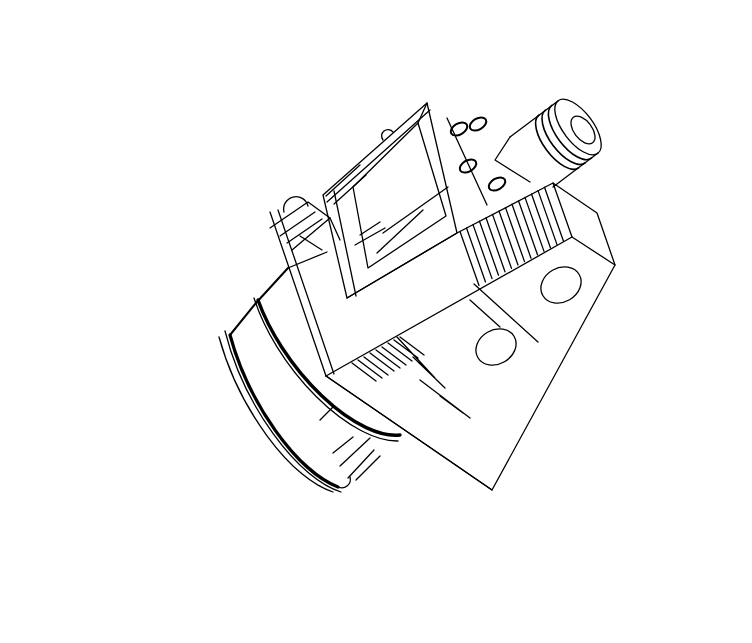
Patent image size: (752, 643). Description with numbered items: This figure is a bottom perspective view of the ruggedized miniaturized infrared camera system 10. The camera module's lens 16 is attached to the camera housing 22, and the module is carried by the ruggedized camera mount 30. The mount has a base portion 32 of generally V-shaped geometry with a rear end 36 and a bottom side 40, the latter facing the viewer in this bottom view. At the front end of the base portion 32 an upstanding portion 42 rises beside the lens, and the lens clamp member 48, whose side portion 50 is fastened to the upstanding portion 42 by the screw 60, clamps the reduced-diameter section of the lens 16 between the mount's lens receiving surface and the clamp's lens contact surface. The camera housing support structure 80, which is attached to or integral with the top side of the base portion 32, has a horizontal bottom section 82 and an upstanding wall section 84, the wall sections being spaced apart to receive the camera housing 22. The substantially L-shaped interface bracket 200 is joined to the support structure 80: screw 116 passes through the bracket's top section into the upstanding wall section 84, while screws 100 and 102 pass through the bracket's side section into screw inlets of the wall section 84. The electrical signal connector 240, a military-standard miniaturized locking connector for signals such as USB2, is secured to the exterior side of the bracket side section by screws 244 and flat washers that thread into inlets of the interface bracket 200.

The ruggedized miniaturized infrared camera system 10 is at (105, 170).
The lens 16 is at (288, 407).
The camera housing 22 is at (332, 188).
The ruggedized camera mount 30 is at (523, 433).
The base portion 32 is at (465, 456).
The rear end 36 is at (588, 227).
The bottom side 40 is at (547, 363).
The upstanding portion 42 is at (320, 290).
The lens clamp member 48 is at (290, 232).
The side portion 50 is at (300, 232).
The screw 60 is at (287, 207).
The camera housing support structure 80 is at (390, 250).
The horizontal bottom section 82 is at (450, 229).
The upstanding wall section 84 is at (407, 204).
The screw 100 is at (472, 115).
The screw 102 is at (470, 185).
The screw 116 is at (387, 137).
The interface bracket 200 is at (428, 100).
The electrical signal connector 240 is at (588, 112).
The screw 244 is at (470, 127).